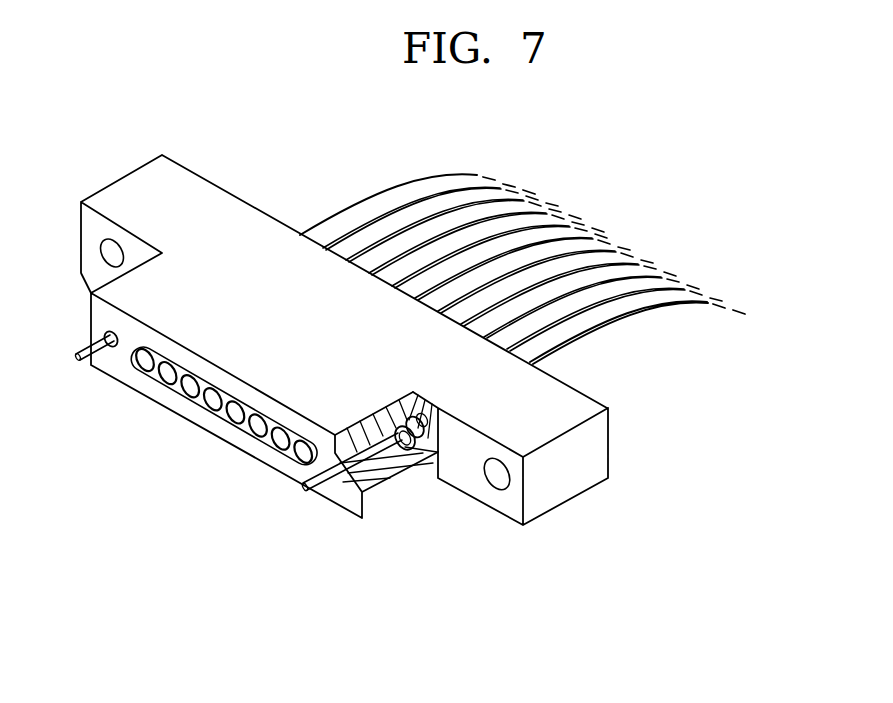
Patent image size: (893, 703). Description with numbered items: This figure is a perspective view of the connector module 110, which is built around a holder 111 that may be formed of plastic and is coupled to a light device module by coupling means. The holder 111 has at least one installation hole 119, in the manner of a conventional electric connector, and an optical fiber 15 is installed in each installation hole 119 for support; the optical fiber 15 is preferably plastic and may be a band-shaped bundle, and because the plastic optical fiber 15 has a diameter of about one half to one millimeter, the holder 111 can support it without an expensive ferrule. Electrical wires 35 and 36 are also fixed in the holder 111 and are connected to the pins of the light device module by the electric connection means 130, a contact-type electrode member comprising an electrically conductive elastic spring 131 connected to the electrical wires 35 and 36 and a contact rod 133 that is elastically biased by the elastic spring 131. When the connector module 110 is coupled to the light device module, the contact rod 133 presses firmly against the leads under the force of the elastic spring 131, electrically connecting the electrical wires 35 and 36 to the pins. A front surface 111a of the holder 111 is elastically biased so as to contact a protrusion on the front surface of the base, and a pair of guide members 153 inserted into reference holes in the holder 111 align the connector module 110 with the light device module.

The optical fiber 15 is at (492, 226).
The electrical wire 35 is at (381, 188).
The electrical wire 36 is at (662, 305).
The connector module 110 is at (453, 513).
The holder 111 is at (615, 401).
The front surface 111a is at (342, 497).
The installation hole 119 is at (230, 421).
The electric connection means 130 is at (376, 473).
The elastic spring 131 is at (403, 415).
The contact rod 133 is at (84, 360).
The guide member 153 is at (110, 257).